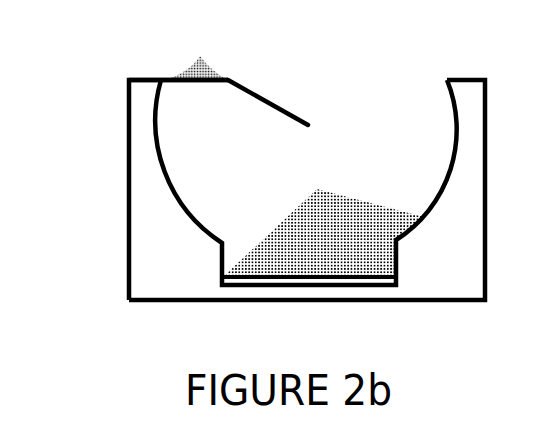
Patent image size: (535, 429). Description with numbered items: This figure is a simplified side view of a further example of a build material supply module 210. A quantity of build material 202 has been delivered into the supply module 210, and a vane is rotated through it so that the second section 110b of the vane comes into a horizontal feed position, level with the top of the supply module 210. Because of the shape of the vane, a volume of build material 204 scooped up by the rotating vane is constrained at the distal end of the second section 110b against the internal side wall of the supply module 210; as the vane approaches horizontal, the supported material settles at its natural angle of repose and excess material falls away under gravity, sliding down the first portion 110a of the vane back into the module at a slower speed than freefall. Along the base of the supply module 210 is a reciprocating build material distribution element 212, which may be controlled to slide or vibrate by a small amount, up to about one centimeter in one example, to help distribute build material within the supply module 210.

The first portion of the vane 110a is at (253, 87).
The second section of the vane 110b is at (197, 78).
The build material 202 is at (317, 212).
The volume of build material 204 is at (198, 68).
The supply module 210 is at (128, 283).
The build material distribution element 212 is at (263, 277).